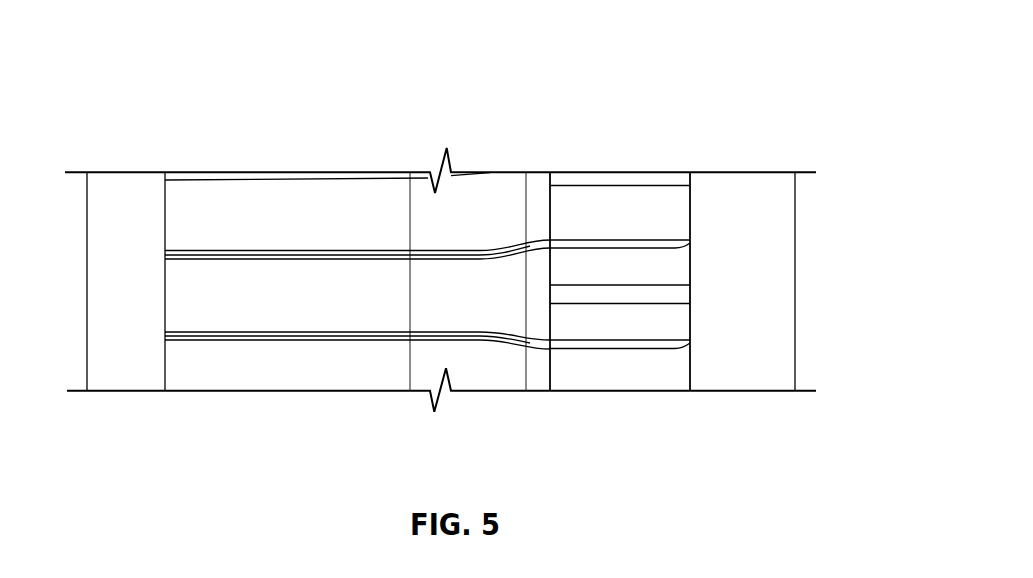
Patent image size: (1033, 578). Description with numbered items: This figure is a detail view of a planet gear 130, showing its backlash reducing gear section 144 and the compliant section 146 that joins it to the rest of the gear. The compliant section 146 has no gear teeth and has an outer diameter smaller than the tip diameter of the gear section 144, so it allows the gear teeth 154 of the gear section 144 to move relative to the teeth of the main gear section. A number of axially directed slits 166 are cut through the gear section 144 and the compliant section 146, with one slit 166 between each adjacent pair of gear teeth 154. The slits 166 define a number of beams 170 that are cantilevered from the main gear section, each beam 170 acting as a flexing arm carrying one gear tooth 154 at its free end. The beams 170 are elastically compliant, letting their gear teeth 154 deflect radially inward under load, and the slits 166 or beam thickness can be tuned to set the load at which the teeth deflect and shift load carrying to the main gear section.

The planet gear 130 is at (710, 83).
The gear section 144 is at (628, 212).
The compliant section 146 is at (373, 176).
The gear teeth 154 is at (675, 213).
The slits 166 is at (250, 250).
The beams 170 is at (320, 225).